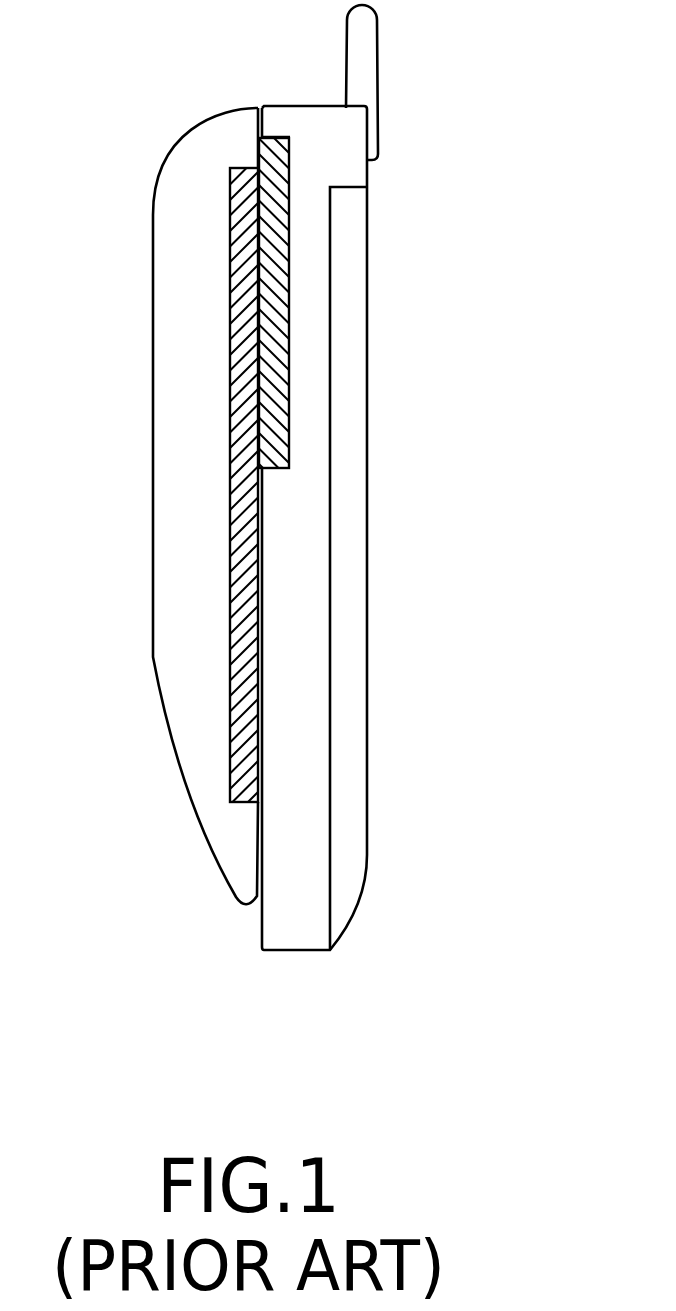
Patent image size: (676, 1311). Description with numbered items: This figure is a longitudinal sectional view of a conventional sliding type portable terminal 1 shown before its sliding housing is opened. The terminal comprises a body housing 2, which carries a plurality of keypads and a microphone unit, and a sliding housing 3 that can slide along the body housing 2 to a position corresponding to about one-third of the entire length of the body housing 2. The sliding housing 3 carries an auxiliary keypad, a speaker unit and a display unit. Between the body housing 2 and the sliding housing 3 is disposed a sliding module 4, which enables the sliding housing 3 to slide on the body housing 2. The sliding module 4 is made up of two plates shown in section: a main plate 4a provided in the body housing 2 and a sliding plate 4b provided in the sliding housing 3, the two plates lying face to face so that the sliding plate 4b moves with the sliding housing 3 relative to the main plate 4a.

The sliding type portable terminal 1 is at (258, 76).
The body housing 2 is at (376, 289).
The sliding housing 3 is at (128, 331).
The sliding module 4 is at (520, 420).
The main plate 4a is at (289, 423).
The sliding plate 4b is at (258, 523).